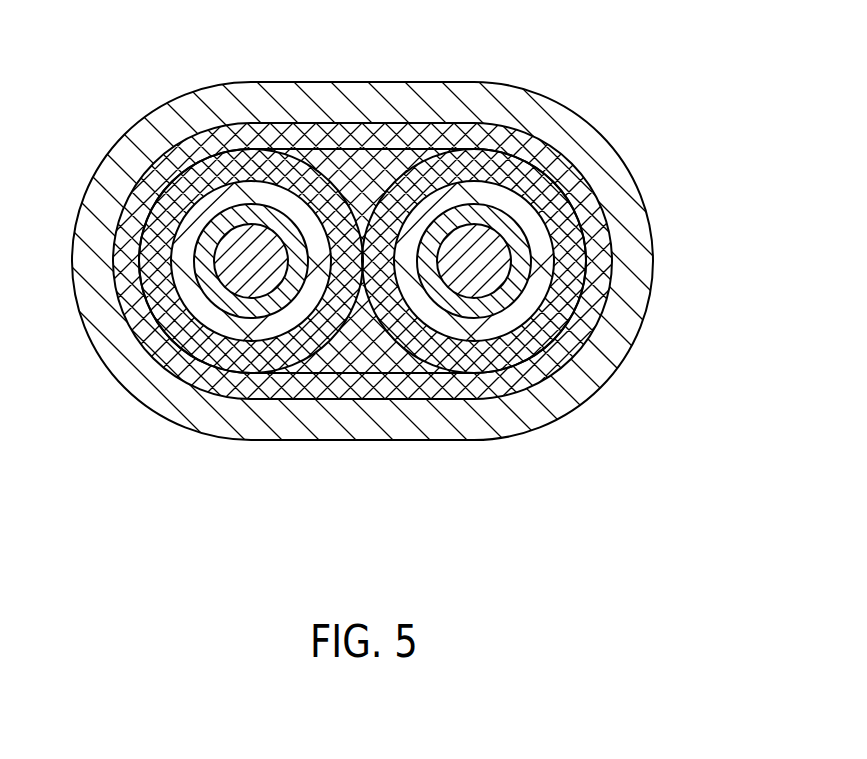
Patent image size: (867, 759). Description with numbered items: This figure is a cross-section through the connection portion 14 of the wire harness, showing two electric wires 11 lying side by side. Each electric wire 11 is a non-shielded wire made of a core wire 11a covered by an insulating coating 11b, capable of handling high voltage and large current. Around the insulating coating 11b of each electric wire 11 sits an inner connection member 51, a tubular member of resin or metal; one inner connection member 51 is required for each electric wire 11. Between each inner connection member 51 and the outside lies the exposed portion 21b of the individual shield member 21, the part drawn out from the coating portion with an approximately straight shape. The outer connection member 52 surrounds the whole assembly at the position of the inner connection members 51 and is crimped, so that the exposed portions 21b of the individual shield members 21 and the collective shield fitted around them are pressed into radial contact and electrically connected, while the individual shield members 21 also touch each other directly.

The connection portion 14 is at (610, 67).
The electric wire 11 is at (398, 262).
The core wire 11a is at (495, 262).
The insulating coating 11b is at (513, 230).
The inner connection member 51 is at (178, 353).
The exposed portion of individual shield member 21b is at (384, 337).
The individual shield member 21 is at (433, 324).
The outer connection member 52 is at (602, 373).